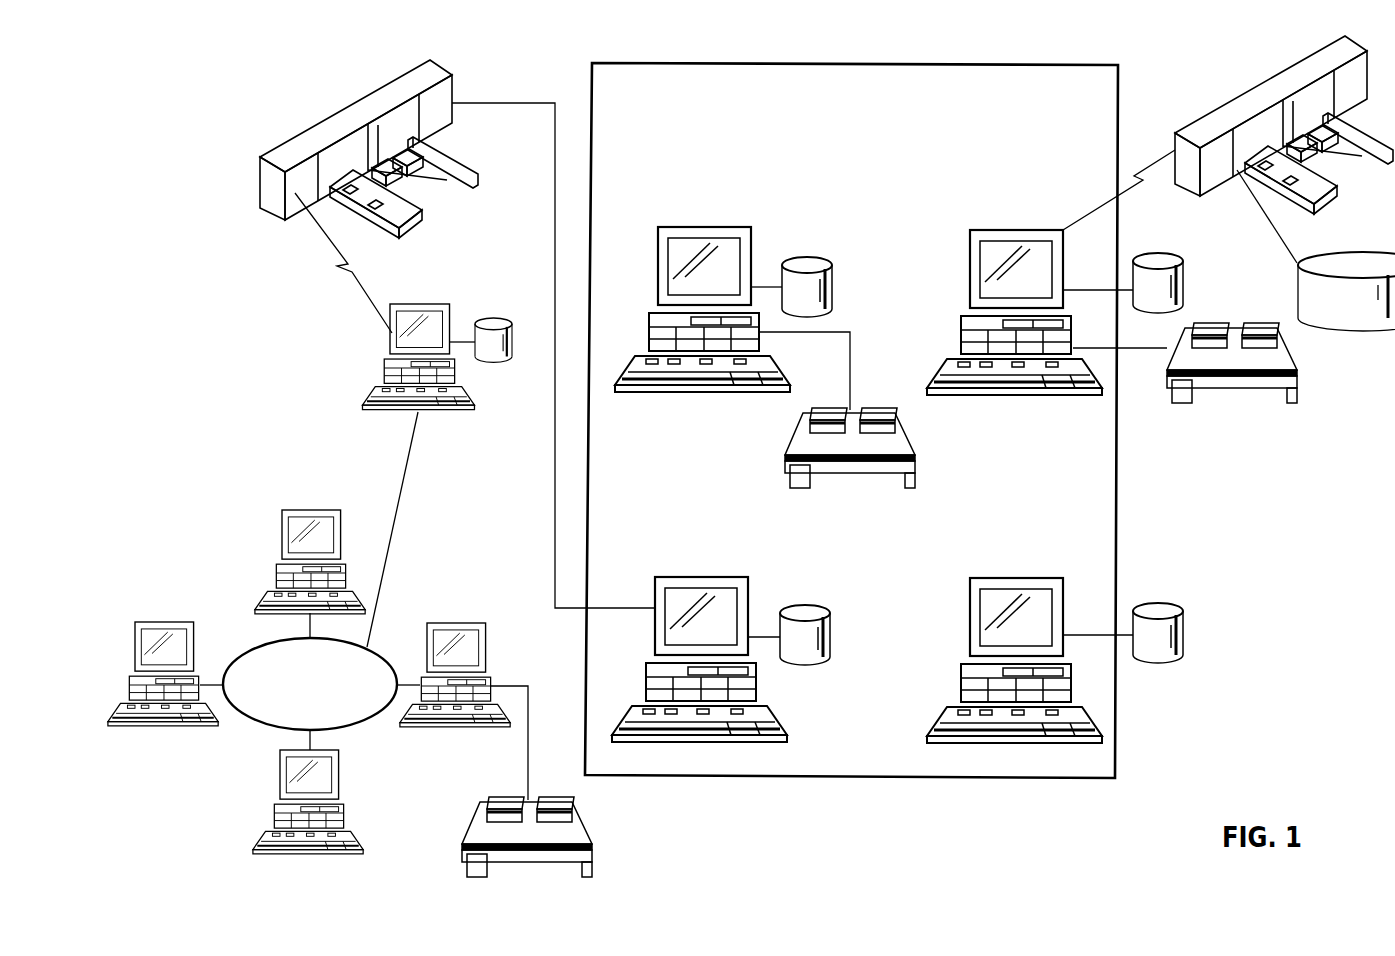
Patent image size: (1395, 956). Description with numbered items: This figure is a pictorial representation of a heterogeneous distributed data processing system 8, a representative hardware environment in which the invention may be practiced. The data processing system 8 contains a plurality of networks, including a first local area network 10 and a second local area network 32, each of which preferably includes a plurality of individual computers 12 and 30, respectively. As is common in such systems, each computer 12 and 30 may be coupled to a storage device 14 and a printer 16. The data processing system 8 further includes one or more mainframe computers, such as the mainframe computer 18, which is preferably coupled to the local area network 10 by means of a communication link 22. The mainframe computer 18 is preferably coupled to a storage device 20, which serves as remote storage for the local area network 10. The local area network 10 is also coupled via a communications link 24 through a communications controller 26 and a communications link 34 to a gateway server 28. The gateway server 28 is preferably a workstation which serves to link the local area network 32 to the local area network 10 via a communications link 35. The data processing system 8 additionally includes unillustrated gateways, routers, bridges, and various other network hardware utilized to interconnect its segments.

The distributed data processing system 8 is at (575, 64).
The local area network 10 is at (736, 134).
The individual computer 12 is at (675, 227).
The storage device 14 is at (832, 290).
The printer 16 is at (908, 443).
The mainframe computer 18 is at (1197, 128).
The storage device 20 is at (1353, 308).
The communication link 22 is at (1148, 158).
The communications link 24 is at (557, 240).
The communications controller 26 is at (332, 125).
The gateway server 28 is at (437, 304).
The individual computer 30 is at (300, 510).
The local area network 32 is at (263, 727).
The communications link 34 is at (360, 298).
The communications link 35 is at (407, 484).